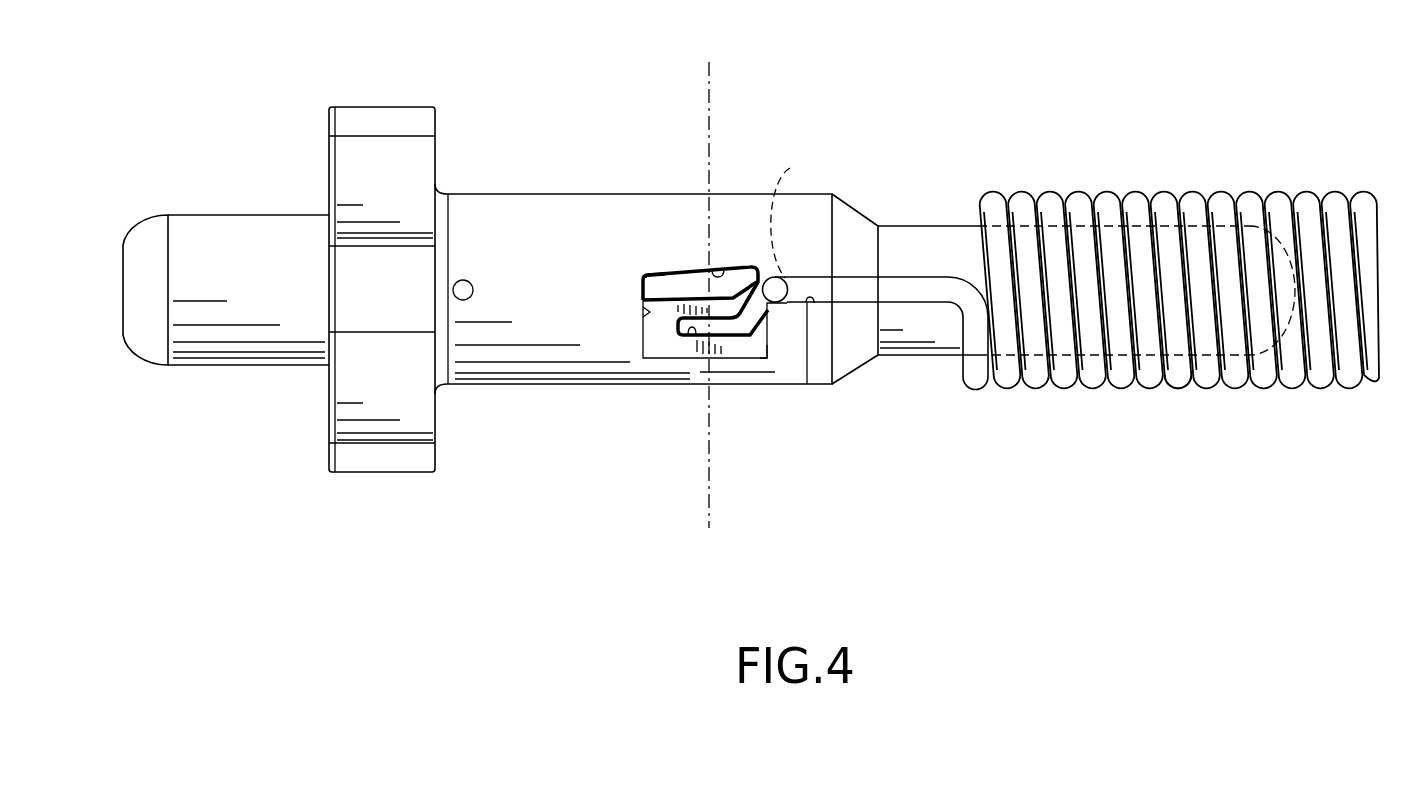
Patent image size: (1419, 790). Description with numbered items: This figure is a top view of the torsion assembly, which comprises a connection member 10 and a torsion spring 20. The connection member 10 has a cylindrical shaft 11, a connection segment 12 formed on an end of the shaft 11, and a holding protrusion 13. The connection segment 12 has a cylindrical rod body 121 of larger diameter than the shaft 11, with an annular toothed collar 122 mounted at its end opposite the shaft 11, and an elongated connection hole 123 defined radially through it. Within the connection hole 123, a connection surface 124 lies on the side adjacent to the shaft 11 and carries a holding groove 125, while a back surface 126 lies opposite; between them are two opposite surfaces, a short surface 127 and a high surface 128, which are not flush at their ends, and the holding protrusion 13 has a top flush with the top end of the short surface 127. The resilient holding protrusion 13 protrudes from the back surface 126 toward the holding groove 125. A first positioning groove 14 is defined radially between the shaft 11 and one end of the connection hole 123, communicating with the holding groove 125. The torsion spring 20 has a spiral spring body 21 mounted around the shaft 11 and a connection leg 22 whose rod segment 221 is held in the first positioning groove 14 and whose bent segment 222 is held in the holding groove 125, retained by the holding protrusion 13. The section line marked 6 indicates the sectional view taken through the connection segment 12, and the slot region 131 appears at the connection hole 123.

The connection member 10 is at (272, 103).
The shaft 11 is at (920, 337).
The connection segment 12 is at (513, 180).
The rod body 121 is at (523, 368).
The annular toothed collar 122 is at (395, 153).
The connection hole 123 is at (656, 262).
The connection surface 124 is at (766, 358).
The holding groove 125 is at (790, 168).
The back surface 126 is at (644, 312).
The short surface 127 is at (695, 340).
The high surface 128 is at (723, 265).
The holding protrusion 13 is at (697, 271).
The slot 131 is at (662, 345).
The first positioning groove 14 is at (812, 304).
The torsion spring 20 is at (1172, 160).
The spring body 21 is at (1187, 405).
The connection leg 22 is at (924, 262).
The rod segment 221 is at (855, 283).
The bent segment 222 is at (761, 272).
The section line 6- 6 is at (684, 510).